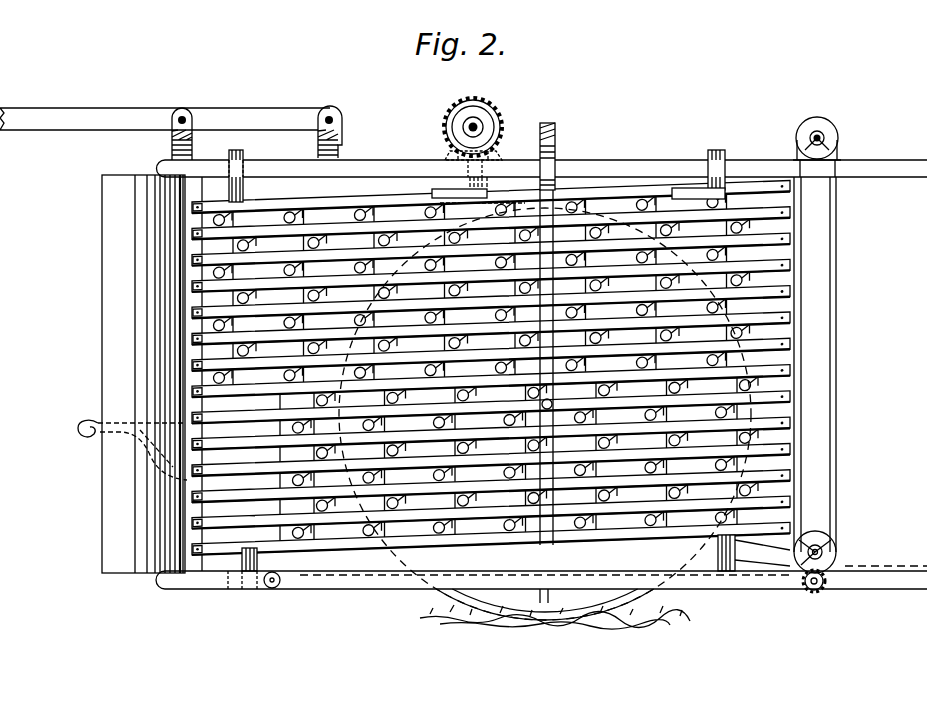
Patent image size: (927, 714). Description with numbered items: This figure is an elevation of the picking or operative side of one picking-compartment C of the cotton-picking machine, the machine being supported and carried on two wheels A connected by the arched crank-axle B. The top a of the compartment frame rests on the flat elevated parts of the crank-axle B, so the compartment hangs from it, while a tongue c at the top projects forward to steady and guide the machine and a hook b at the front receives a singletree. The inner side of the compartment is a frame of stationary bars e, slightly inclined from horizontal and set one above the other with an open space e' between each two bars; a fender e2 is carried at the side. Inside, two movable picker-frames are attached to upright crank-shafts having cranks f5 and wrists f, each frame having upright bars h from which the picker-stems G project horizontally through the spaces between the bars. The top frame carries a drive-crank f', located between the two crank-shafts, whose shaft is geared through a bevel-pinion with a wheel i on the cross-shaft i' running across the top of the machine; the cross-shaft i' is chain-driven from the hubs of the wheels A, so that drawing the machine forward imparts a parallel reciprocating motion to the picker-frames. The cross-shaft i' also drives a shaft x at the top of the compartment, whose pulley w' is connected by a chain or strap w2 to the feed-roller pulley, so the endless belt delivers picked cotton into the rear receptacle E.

The tongue c is at (83, 112).
The picking-compartment C is at (389, 160).
The top of the compartment frame a is at (627, 162).
The wheel i is at (476, 135).
The cross-shaft i' is at (454, 121).
The crank-axle B is at (556, 131).
The cranks f5 is at (238, 197).
The drive-crank f' is at (475, 185).
The upper pulley w' is at (805, 143).
The shaft x is at (823, 137).
The chain or strap w2 is at (836, 478).
The receptacle E is at (858, 364).
The stationary bars e is at (491, 370).
The open space e' is at (480, 383).
The fender e2 is at (112, 324).
The upright bars h is at (545, 414).
The picker-stems G is at (462, 350).
The wrists f is at (473, 367).
The hook b is at (80, 426).
The wheels A is at (443, 596).